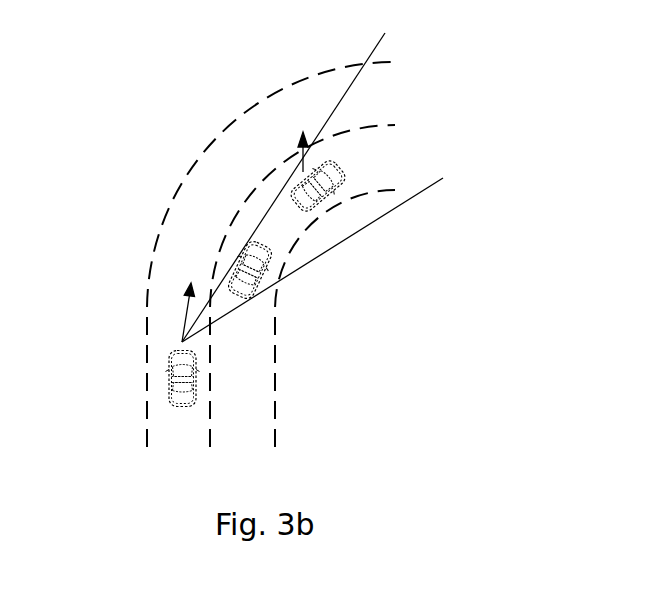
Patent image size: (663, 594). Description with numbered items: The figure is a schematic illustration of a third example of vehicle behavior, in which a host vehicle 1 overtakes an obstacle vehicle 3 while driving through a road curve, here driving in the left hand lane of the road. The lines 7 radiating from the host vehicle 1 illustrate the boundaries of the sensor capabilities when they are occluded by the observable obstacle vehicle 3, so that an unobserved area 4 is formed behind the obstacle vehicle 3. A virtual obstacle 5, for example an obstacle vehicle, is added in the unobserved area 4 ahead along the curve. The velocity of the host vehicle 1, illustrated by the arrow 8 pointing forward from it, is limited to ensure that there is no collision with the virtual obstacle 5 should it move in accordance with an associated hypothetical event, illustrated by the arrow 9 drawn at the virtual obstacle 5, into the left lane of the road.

The host vehicle 1 is at (180, 384).
The obstacle vehicle 3 is at (252, 280).
The unobserved area 4 is at (387, 168).
The virtual obstacle 5 is at (313, 190).
The dotted lines 7 is at (375, 52).
The arrow 8 is at (183, 320).
The arrow 9 is at (302, 153).